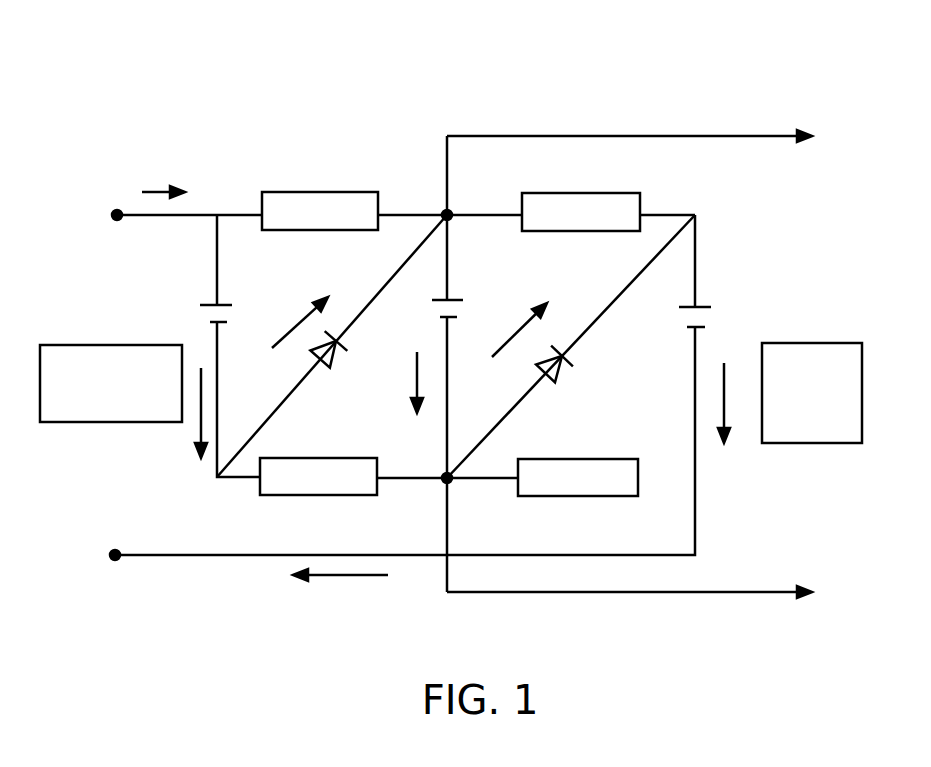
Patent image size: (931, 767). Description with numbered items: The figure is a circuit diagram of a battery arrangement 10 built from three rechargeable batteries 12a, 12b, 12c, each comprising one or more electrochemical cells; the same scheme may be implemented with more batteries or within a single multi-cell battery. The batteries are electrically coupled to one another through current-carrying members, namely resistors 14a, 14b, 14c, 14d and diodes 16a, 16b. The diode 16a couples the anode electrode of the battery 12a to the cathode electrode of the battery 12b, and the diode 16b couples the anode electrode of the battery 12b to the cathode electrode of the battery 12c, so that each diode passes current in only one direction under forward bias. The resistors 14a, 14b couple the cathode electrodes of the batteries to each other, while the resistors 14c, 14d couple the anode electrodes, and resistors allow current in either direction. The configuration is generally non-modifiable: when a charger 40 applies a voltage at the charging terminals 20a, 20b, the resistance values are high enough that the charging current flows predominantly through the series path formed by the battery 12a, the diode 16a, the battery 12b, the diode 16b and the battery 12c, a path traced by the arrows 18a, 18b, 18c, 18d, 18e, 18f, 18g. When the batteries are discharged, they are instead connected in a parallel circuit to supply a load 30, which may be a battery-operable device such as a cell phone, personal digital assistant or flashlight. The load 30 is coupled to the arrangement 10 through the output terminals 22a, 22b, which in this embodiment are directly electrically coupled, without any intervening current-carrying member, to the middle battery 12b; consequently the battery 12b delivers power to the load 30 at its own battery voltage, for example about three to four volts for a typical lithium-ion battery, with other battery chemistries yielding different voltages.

The battery arrangement 10 is at (307, 80).
The battery 12a is at (211, 303).
The battery 12b is at (458, 298).
The battery 12c is at (700, 305).
The resistor 14a is at (328, 192).
The resistor 14b is at (588, 195).
The resistor 14c is at (307, 495).
The resistor 14d is at (588, 497).
The diode 16a is at (332, 360).
The diode 16b is at (558, 368).
The arrow 18a is at (160, 187).
The arrow 18b is at (197, 428).
The arrow 18c is at (315, 317).
The arrow 18d is at (413, 377).
The arrow 18e is at (512, 340).
The arrow 18f is at (727, 390).
The arrow 18g is at (352, 577).
The charging terminal 20a is at (117, 212).
The charging terminal 20b is at (115, 552).
The output terminal 22a is at (453, 210).
The output terminal 22b is at (442, 483).
The load 30 is at (810, 343).
The charger 40 is at (135, 345).